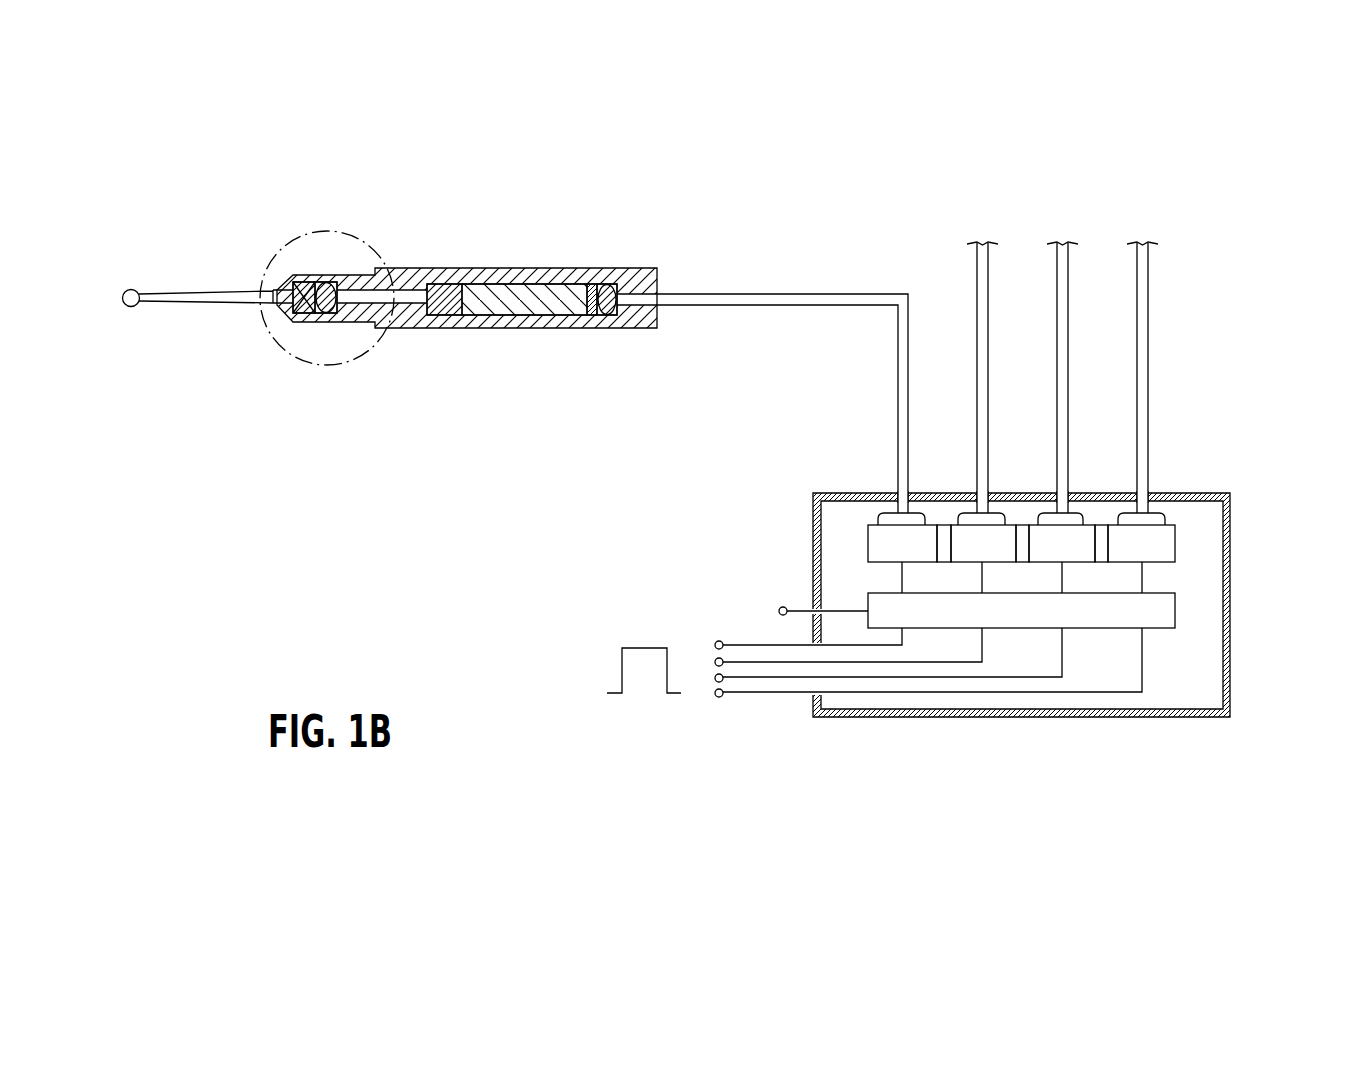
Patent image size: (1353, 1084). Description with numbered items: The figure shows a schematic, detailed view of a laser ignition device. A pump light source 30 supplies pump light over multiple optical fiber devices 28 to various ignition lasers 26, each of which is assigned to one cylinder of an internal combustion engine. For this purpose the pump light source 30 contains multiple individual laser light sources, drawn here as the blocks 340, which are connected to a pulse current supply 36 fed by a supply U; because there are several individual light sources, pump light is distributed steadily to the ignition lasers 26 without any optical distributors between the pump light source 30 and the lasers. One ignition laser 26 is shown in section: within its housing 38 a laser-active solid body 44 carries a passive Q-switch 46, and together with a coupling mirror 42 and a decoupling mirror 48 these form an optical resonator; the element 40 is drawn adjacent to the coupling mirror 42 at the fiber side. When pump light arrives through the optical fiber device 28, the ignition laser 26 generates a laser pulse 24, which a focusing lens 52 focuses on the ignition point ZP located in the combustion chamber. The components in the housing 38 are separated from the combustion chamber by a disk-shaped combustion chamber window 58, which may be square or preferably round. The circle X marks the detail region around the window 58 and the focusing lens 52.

The laser pulse 24 is at (207, 303).
The ignition laser 26 is at (532, 262).
The optical fiber device 28 is at (977, 325).
The pump light source 30 is at (1075, 717).
The pulse current supply 36 is at (1153, 612).
The housing 38 is at (527, 317).
The ball element 40 is at (601, 314).
The coupling mirror 42 is at (593, 287).
The laser-active solid body 44 is at (488, 297).
The passive Q-switch 46 is at (448, 297).
The decoupling mirror 48 is at (422, 290).
The focusing lens 52 is at (327, 313).
The combustion chamber window 58 is at (301, 283).
The connector blocks 340 is at (966, 549).
The ignition point ZP is at (132, 281).
The detail region X is at (270, 262).
The voltage supply U is at (812, 613).